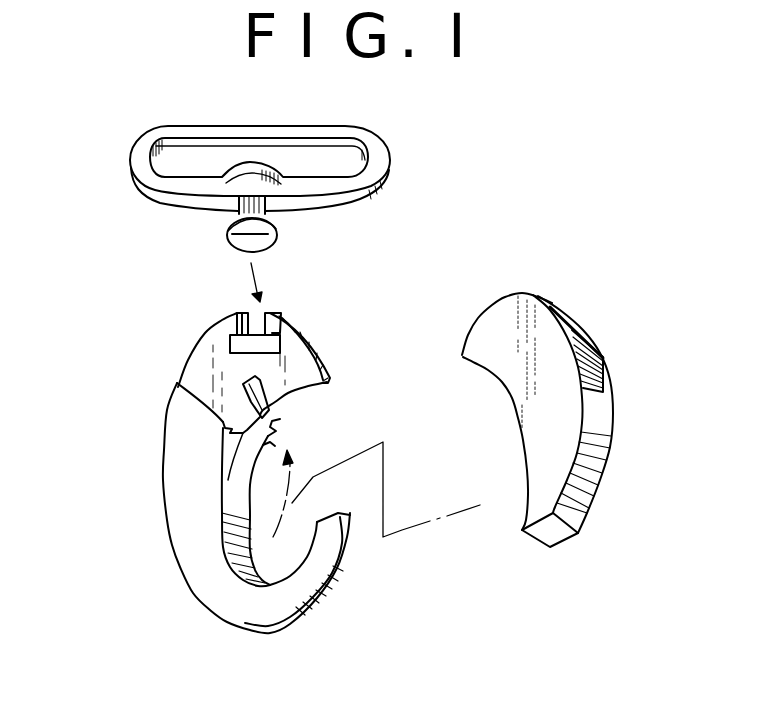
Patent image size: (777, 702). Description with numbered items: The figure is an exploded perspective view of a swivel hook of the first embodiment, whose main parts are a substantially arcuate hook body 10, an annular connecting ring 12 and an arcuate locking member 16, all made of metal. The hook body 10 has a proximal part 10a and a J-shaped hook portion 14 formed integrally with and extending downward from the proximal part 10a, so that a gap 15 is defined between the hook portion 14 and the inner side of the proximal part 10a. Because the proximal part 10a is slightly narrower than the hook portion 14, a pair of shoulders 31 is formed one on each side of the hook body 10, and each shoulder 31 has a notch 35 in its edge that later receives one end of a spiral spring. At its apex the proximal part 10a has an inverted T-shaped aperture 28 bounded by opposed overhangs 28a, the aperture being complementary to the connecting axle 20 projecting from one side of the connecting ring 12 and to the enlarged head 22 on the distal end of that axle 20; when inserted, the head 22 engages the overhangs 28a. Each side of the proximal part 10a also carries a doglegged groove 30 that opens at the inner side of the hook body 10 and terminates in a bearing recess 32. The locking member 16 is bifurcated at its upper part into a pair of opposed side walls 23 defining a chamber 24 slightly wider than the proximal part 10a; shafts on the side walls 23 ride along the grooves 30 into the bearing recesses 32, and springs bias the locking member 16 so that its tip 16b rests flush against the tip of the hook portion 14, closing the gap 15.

The hook body 10 is at (152, 429).
The proximal part 10a is at (300, 367).
The connecting ring 12 is at (354, 116).
The J-shaped hook portion 14 is at (235, 600).
The gap 15 is at (333, 413).
The arcuate locking member 16 is at (600, 432).
The tip 16b is at (548, 534).
The connecting axle 20 is at (238, 210).
The enlarged head 22 is at (268, 244).
The side walls 23 is at (517, 296).
The chamber 24 is at (593, 358).
The inverted T-shaped aperture 28 is at (268, 345).
The tabs 28a is at (293, 313).
The doglegged groove 30 is at (280, 419).
The shoulder 31 is at (215, 409).
The bearing recess 32 is at (243, 384).
The notch 35 is at (225, 428).